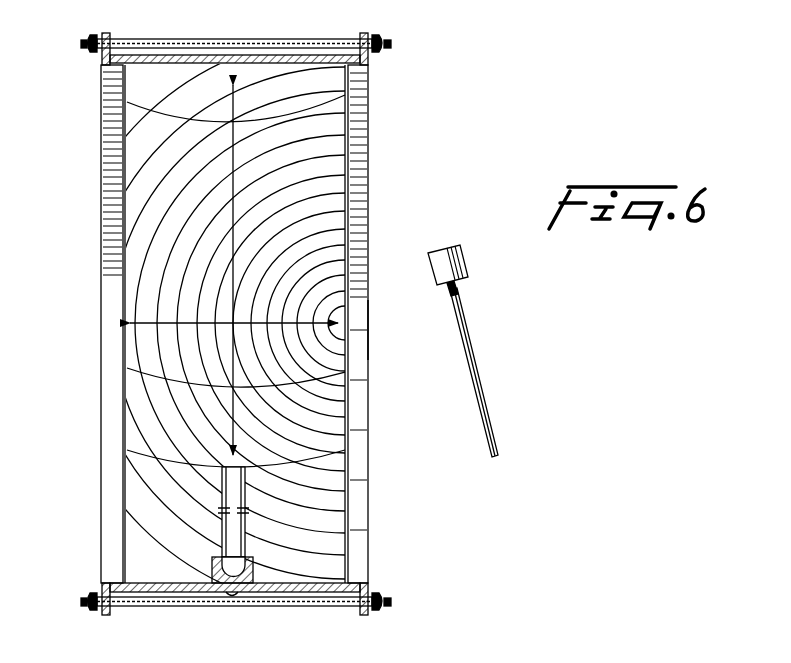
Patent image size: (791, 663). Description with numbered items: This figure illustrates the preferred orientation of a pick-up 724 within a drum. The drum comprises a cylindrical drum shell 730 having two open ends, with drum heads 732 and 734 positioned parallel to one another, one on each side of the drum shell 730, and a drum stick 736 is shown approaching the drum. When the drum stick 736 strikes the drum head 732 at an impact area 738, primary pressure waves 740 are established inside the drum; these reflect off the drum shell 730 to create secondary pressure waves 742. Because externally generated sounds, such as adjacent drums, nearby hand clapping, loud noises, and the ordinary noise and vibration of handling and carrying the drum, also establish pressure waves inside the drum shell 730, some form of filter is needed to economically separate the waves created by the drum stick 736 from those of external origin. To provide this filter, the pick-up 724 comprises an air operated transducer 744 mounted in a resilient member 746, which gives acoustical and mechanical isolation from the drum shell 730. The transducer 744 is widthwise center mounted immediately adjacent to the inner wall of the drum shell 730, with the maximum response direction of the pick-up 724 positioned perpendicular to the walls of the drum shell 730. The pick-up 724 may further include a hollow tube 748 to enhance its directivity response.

The pick-up 724 is at (259, 532).
The cylindrical drum shell 730 is at (270, 51).
The drum head 732 is at (372, 216).
The drum head 734 is at (99, 338).
The drum stick 736 is at (472, 325).
The impact area 738 is at (373, 331).
The primary pressure waves 740 is at (303, 148).
The secondary pressure waves 742 is at (165, 462).
The air operated transducer 744 is at (270, 590).
The resilient member 746 is at (222, 578).
The hollow tube 748 is at (213, 530).